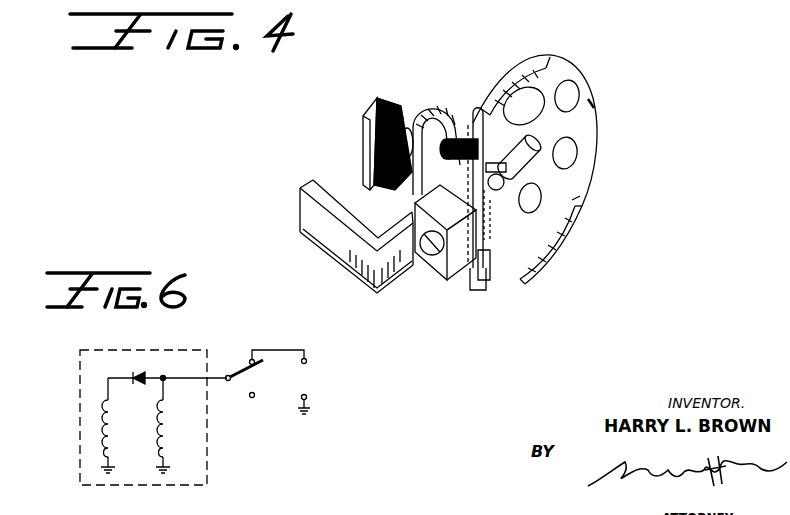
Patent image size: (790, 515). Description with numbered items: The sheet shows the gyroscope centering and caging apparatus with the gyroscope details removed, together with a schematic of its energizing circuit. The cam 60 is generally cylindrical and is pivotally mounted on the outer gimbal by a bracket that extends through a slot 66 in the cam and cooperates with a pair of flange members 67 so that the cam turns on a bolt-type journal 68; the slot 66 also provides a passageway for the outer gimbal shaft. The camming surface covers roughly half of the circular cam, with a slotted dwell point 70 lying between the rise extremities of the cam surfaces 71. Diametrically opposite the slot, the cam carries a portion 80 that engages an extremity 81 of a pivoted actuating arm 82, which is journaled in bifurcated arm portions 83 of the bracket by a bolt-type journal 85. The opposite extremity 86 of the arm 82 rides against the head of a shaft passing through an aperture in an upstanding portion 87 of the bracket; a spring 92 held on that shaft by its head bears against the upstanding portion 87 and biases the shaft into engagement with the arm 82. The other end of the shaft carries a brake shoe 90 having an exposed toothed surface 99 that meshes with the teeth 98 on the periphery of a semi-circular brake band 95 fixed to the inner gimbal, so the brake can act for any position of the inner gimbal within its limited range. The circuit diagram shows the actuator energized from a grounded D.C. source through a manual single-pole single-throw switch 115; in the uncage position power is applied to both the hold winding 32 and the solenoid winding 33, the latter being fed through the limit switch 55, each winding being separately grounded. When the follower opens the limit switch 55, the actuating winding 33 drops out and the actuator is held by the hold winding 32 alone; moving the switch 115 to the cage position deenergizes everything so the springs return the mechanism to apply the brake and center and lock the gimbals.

In FIG. 4, the cam 60 is at (580, 123).
In FIG. 4, the slot 66 is at (537, 170).
In FIG. 4, the flange members 67 is at (572, 200).
In FIG. 4, the journal 68 is at (518, 218).
In FIG. 4, the slotted dwell point 70 is at (591, 102).
In FIG. 4, the cam surfaces 71 is at (527, 62).
In FIG. 4, the cam portion 80 is at (471, 290).
In FIG. 4, the arm extremity 81 is at (484, 270).
In FIG. 4, the actuating arm 82 is at (453, 277).
In FIG. 4, the bifurcated arm portions 83 is at (415, 203).
In FIG. 4, the journal 85 is at (427, 258).
In FIG. 4, the arm extremity 86 is at (479, 110).
In FIG. 4, the upstanding portion 87 is at (440, 118).
In FIG. 4, the brake shoe 90 is at (408, 127).
In FIG. 4, the spring 92 is at (455, 136).
In FIG. 4, the brake band 95 is at (365, 131).
In FIG. 4, the teeth 98 is at (387, 97).
In FIG. 4, the toothed surface 99 is at (396, 103).
In FIG. 6, the hold winding 32 is at (168, 438).
In FIG. 6, the solenoid winding 33 is at (114, 438).
In FIG. 6, the limit switch 55 is at (132, 372).
In FIG. 6, the manual switch 115 is at (242, 362).